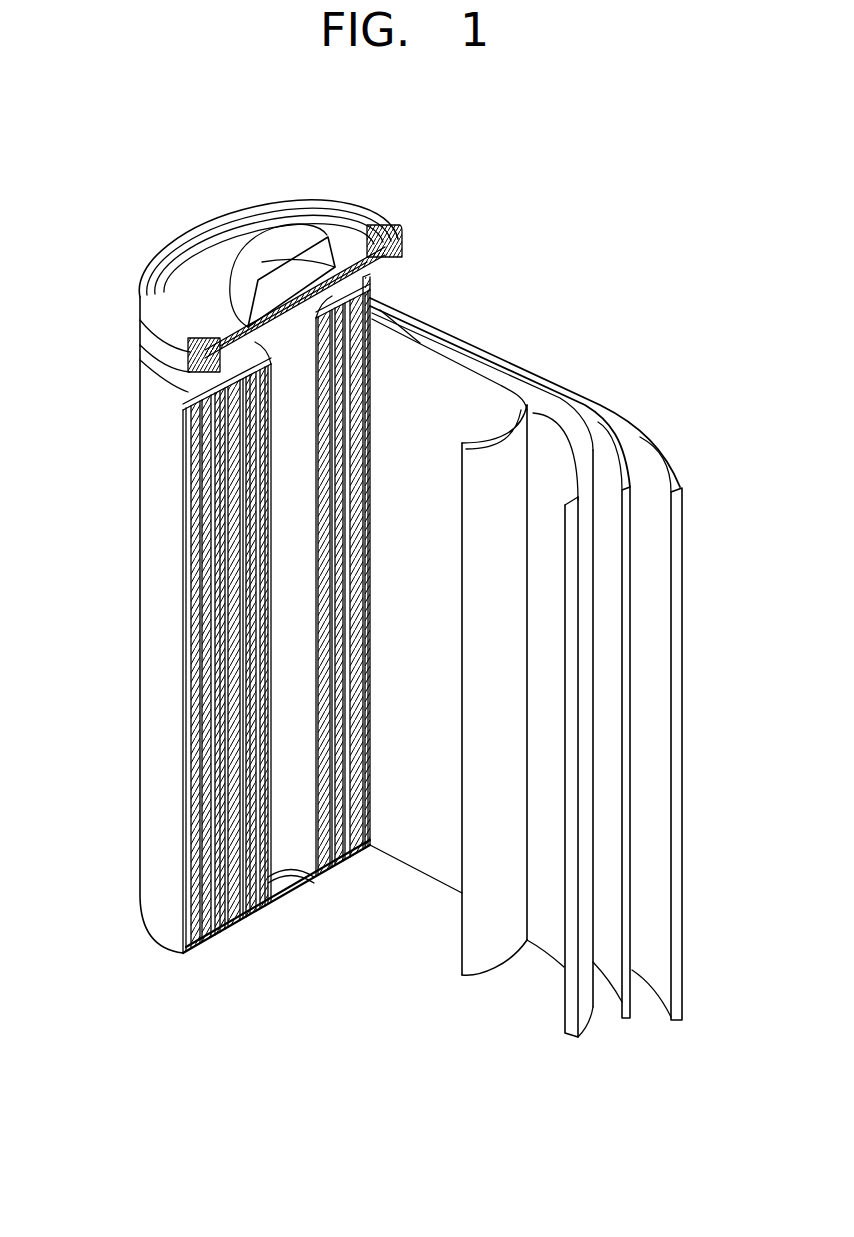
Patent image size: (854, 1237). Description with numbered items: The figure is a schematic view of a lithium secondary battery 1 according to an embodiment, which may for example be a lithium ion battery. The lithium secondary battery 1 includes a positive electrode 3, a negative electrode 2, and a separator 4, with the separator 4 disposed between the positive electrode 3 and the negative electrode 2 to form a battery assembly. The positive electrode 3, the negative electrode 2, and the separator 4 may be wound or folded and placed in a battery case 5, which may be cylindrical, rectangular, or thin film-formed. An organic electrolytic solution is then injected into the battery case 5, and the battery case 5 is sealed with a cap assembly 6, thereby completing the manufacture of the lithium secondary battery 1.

The lithium secondary battery 1 is at (575, 226).
The negative electrode 2 is at (657, 457).
The positive electrode 3 is at (583, 453).
The separator 4 is at (507, 400).
The battery case 5 is at (147, 623).
The cap assembly 6 is at (262, 243).